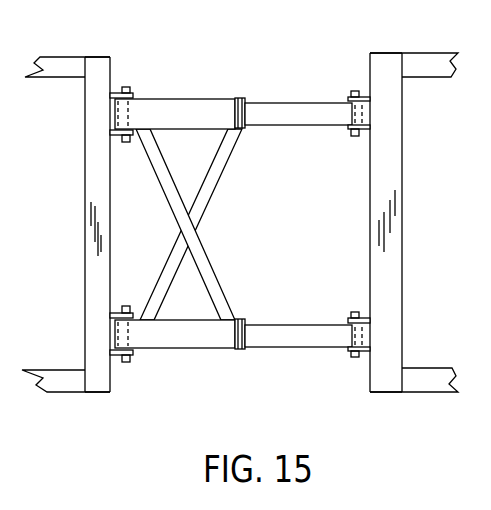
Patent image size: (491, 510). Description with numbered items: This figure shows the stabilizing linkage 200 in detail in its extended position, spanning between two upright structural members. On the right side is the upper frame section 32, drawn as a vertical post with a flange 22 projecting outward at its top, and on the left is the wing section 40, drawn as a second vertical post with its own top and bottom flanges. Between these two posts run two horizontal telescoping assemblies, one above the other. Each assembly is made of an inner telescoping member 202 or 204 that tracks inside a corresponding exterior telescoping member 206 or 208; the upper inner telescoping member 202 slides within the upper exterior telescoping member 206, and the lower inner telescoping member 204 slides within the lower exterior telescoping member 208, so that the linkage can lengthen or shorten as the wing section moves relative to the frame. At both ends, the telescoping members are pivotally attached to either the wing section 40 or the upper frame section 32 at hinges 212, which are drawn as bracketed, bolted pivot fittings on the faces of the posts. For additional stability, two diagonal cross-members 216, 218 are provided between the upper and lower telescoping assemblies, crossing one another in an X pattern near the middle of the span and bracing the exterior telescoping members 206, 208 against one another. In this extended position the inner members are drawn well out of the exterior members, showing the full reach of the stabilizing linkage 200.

The upper frame member 22 is at (428, 52).
The upper frame section 32 is at (395, 88).
The wing section 40 is at (65, 386).
The stabilizing linkage 200 is at (266, 76).
The telescoping member 202 is at (298, 125).
The telescoping member 204 is at (283, 324).
The exterior telescoping member 206 is at (183, 100).
The exterior telescoping member 208 is at (170, 350).
The hinges 212 is at (124, 86).
The cross-member 216 is at (208, 252).
The cross-member 218 is at (214, 189).